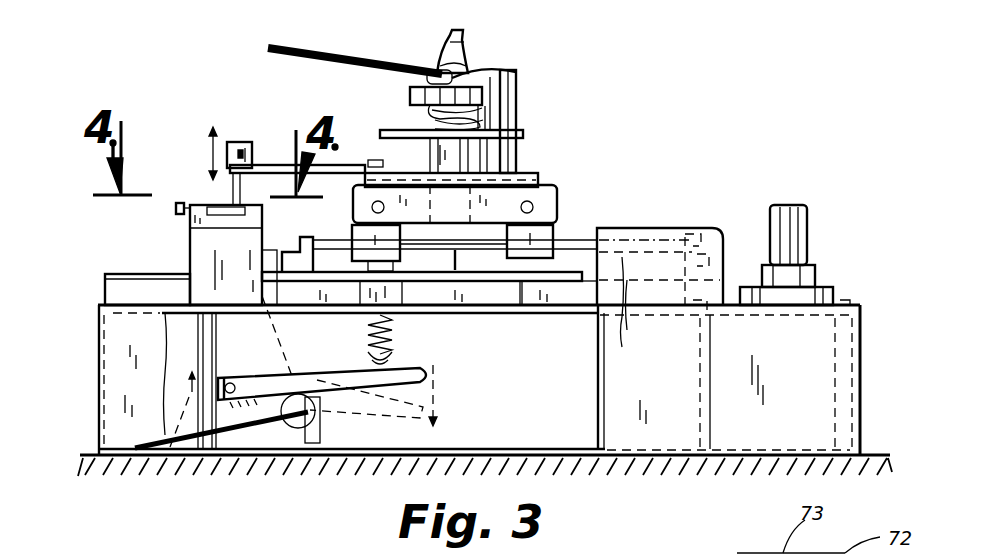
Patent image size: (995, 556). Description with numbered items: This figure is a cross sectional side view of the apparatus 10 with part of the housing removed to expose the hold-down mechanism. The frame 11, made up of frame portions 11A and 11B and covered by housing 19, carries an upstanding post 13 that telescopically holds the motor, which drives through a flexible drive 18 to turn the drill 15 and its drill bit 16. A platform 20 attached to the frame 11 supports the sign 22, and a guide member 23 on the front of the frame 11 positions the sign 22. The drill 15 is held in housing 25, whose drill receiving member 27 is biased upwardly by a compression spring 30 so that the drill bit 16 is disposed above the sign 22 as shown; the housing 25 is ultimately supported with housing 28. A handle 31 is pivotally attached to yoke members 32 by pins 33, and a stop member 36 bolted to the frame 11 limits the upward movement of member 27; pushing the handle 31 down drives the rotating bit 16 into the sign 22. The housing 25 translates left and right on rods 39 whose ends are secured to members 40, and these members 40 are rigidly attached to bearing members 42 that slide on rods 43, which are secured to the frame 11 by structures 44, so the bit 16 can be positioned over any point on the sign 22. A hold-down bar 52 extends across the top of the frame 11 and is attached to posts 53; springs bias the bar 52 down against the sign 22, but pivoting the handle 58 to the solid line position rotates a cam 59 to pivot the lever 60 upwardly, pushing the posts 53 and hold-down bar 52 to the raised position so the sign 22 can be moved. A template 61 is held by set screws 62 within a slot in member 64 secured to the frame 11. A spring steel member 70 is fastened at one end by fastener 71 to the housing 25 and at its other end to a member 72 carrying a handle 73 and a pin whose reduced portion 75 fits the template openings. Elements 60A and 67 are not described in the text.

The apparatus 10 is at (600, 118).
The frame 11 is at (582, 318).
The frame 11A is at (545, 449).
The frame 11B is at (217, 340).
The upstanding post 13 is at (807, 223).
The drill 15 is at (468, 70).
The drill bit 16 is at (460, 262).
The flexible drive 18 is at (450, 46).
The housing 19 is at (139, 392).
The platform 20 is at (137, 290).
The sign 22 is at (530, 286).
The guide member 23 is at (104, 296).
The housing 25 is at (538, 180).
The member 27 is at (412, 94).
The housing 28 is at (523, 133).
The compression spring 30 is at (424, 114).
The handle 31 is at (305, 46).
The yoke members 32 is at (517, 82).
The pins 33 is at (516, 70).
The stop member 36 is at (500, 112).
The rods 39 is at (537, 207).
The members 40 is at (557, 192).
The bearing members 42 is at (553, 237).
The rods 43 is at (560, 244).
The structures 44 is at (735, 186).
The hold-down bar 52 is at (402, 265).
The posts 53 is at (392, 356).
The handle 58 is at (178, 458).
The cam 59 is at (323, 415).
The lever 60 is at (338, 372).
The lever pivot 60A is at (232, 380).
The template 61 is at (228, 202).
The set screws 62 is at (182, 205).
The member 64 is at (177, 209).
The column 67 is at (240, 282).
The spring steel member 70 is at (275, 165).
The fastener 71 is at (373, 160).
The member 72 is at (232, 200).
The handle 73 is at (237, 145).
The reduced portion 75 is at (218, 187).